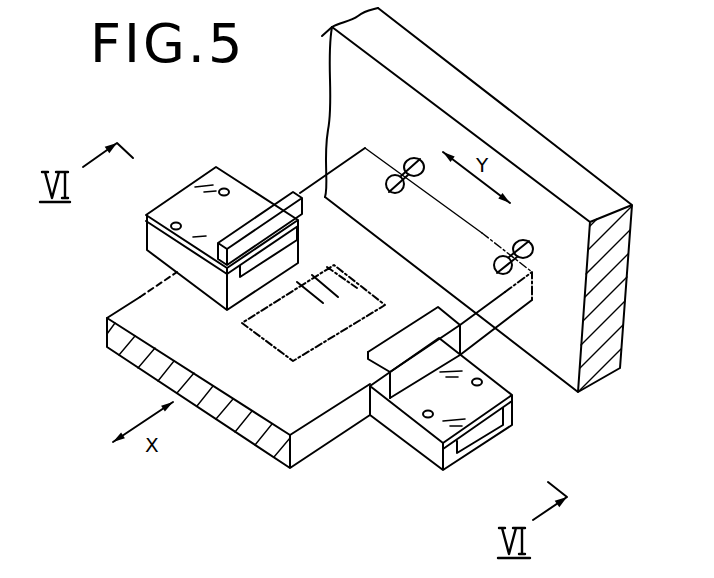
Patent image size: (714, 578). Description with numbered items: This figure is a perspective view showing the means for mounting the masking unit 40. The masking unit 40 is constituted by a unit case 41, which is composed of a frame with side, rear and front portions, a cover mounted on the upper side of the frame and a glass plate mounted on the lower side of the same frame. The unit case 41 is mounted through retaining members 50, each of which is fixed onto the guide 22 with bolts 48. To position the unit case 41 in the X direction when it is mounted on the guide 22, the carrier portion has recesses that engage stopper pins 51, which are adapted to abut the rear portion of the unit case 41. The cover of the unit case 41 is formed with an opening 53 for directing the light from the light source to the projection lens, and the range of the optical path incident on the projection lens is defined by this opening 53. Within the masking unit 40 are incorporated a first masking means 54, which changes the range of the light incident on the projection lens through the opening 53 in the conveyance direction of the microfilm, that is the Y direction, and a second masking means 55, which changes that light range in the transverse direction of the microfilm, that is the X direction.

The guide 22 is at (147, 243).
The masking unit 40 is at (312, 388).
The unit case 41 is at (447, 257).
The bolts 48 is at (229, 187).
The retaining members 50 is at (290, 192).
The stopper pins 51 is at (398, 167).
The opening 53 is at (372, 307).
The first masking means 54 is at (298, 297).
The second masking means 55 is at (285, 341).